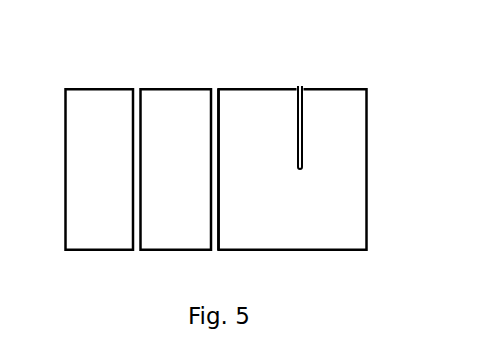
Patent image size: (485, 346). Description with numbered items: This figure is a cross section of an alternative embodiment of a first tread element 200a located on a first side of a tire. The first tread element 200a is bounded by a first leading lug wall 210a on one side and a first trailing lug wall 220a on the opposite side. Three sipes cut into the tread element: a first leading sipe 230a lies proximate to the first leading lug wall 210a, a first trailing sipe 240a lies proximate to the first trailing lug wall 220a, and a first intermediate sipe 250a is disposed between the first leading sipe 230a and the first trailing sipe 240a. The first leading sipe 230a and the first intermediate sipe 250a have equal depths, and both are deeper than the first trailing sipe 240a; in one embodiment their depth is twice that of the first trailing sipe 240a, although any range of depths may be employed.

The first tread element 200a is at (215, 125).
The first leading lug wall 210a is at (63, 113).
The first trailing lug wall 220a is at (363, 118).
The first leading sipe 230a is at (137, 87).
The first trailing sipe 240a is at (299, 87).
The first intermediate sipe 250a is at (218, 87).